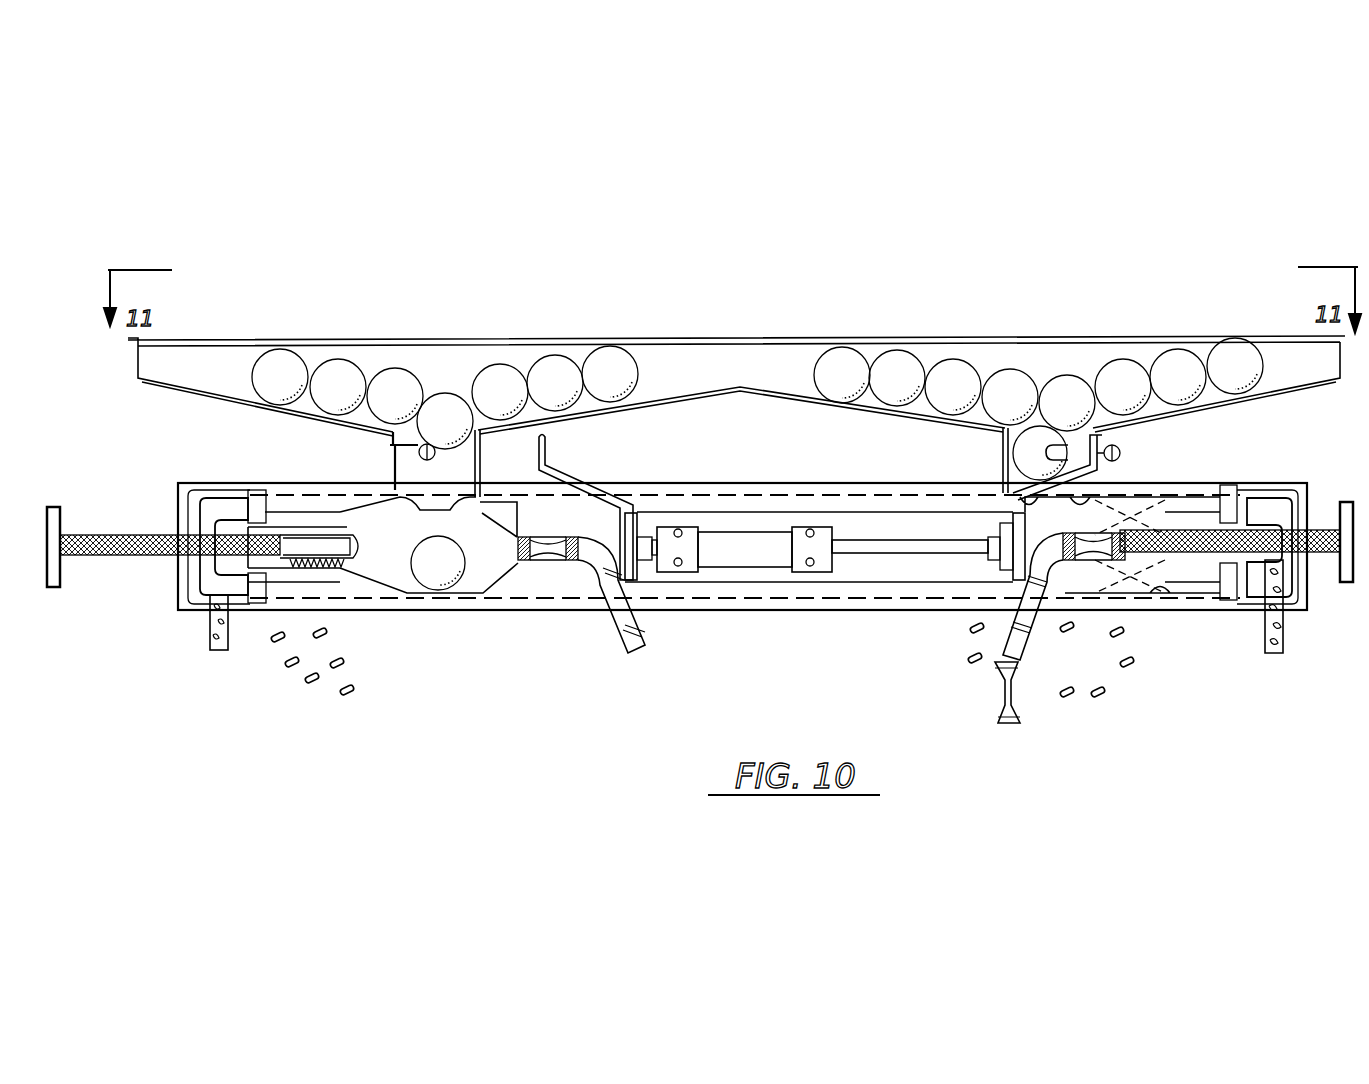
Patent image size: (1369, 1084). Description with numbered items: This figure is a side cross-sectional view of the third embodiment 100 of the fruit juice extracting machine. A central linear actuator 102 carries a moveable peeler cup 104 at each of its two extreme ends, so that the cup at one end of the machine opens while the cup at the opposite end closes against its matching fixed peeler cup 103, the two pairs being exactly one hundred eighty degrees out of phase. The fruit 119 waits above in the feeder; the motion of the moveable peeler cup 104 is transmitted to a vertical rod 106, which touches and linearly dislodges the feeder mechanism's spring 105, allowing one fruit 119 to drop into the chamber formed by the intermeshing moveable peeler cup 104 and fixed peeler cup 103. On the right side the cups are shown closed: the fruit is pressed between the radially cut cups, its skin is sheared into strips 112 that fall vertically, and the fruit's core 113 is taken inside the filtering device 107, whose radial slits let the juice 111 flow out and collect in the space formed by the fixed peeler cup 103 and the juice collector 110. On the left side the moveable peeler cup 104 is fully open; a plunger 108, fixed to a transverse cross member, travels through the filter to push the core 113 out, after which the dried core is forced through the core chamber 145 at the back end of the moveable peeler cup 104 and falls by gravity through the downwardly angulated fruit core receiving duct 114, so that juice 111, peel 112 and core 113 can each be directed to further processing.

The third embodiment 100 is at (876, 308).
The linear actuator 102 is at (720, 568).
The fixed peeler cup 103 is at (393, 587).
The moveable peeler cup 104 is at (502, 515).
The feeder mechanism's spring 105 is at (413, 451).
The vertical rod 106 is at (1130, 478).
The filtering device 107 is at (333, 577).
The plunger 108 is at (95, 558).
The juice collector 110 is at (210, 625).
The juice 111 is at (1265, 650).
The peel strips 112 is at (345, 692).
The fruit's core 113 is at (995, 713).
The fruit core receiving duct 114 is at (613, 627).
The fruit 119 is at (613, 357).
The core chamber 145 is at (563, 563).